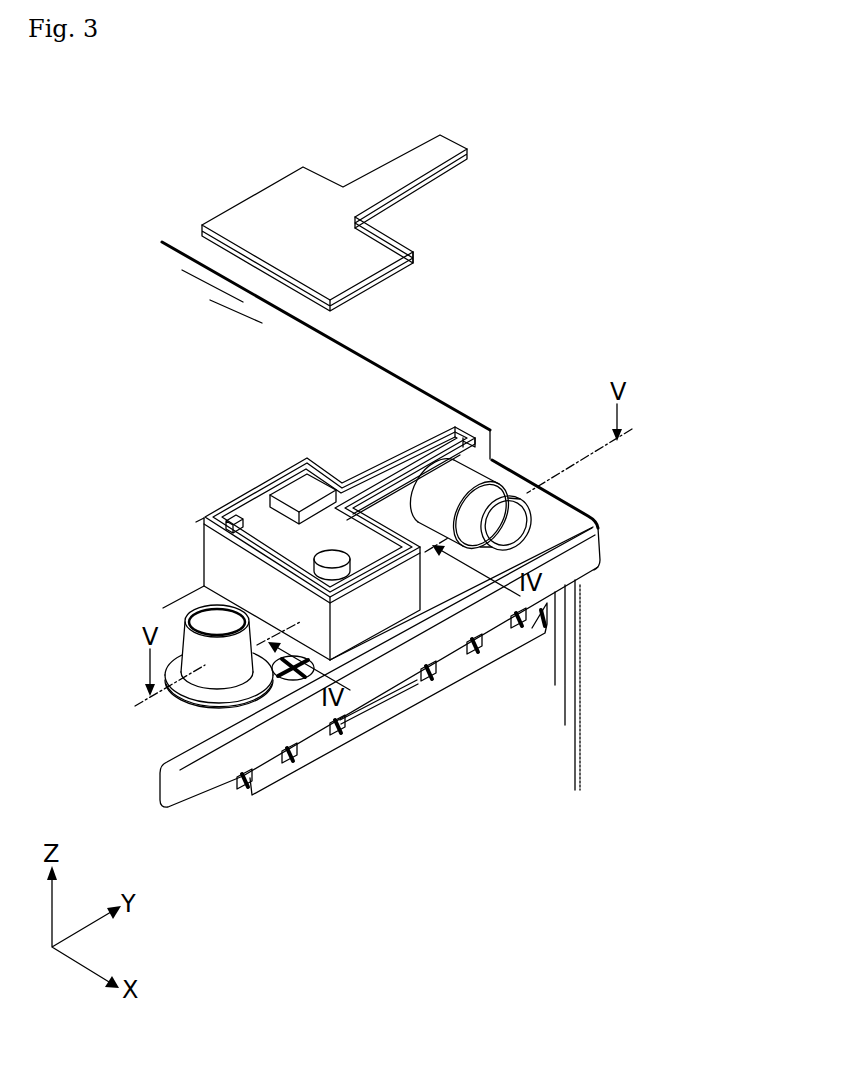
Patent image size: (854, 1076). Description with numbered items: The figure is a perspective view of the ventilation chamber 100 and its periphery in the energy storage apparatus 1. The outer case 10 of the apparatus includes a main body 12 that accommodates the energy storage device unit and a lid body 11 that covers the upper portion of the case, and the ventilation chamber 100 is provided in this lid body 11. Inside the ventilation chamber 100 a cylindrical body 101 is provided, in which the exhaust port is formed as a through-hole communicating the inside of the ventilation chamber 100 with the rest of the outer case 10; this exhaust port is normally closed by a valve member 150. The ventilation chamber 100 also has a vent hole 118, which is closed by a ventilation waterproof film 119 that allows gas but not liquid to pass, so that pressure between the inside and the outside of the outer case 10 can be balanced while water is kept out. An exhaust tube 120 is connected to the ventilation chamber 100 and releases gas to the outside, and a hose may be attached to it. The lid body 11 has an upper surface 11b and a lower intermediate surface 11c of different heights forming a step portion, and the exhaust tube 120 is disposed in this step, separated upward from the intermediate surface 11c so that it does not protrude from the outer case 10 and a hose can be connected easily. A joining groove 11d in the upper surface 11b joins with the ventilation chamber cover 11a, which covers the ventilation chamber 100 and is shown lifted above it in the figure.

The energy storage apparatus 1 is at (570, 196).
The outer case 10 is at (628, 506).
The lid body 11 is at (380, 397).
The ventilation chamber cover 11a is at (322, 222).
The upper surface 11b is at (337, 480).
The intermediate surface 11c is at (547, 540).
The joining groove 11d is at (462, 437).
The main body 12 is at (578, 703).
The ventilation chamber 100 is at (300, 444).
The cylindrical body 101 is at (475, 698).
The vent hole 118 is at (318, 505).
The ventilation waterproof film 119 is at (448, 425).
The exhaust tube 120 is at (498, 495).
The valve member 150 is at (552, 662).